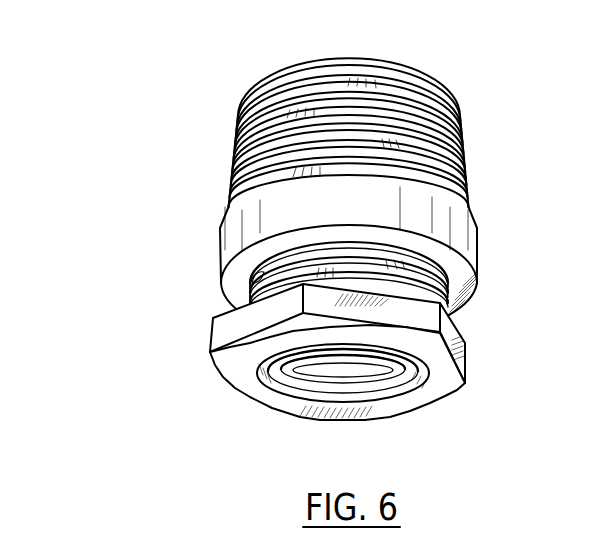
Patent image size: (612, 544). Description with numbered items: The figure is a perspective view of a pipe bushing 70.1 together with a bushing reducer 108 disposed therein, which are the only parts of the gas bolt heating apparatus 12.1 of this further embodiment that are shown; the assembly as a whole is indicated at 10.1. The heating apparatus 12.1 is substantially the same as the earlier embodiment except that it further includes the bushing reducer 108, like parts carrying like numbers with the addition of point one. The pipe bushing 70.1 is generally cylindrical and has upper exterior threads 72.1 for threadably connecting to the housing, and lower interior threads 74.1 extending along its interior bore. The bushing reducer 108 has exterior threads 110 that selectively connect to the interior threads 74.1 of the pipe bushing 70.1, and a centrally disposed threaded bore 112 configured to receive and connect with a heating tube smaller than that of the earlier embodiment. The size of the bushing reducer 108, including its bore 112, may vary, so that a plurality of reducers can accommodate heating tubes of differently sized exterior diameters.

The fitting assembly 10.1 is at (300, 237).
The heating apparatus 12.1 is at (345, 242).
The pipe bushing 70.1 is at (344, 183).
The upper exterior threads 72.1 is at (436, 101).
The interior threads 74.1 is at (250, 285).
The bushing reducer 108 is at (396, 352).
The exterior threads 110 is at (445, 282).
The threaded bore 112 is at (383, 385).